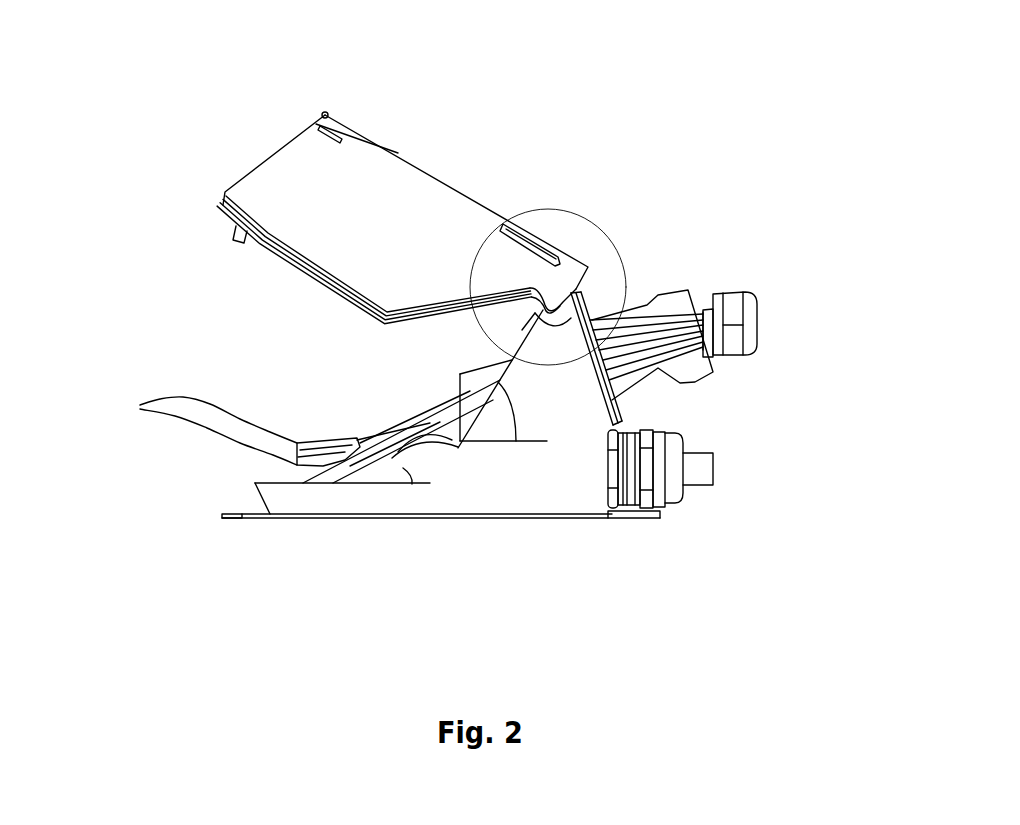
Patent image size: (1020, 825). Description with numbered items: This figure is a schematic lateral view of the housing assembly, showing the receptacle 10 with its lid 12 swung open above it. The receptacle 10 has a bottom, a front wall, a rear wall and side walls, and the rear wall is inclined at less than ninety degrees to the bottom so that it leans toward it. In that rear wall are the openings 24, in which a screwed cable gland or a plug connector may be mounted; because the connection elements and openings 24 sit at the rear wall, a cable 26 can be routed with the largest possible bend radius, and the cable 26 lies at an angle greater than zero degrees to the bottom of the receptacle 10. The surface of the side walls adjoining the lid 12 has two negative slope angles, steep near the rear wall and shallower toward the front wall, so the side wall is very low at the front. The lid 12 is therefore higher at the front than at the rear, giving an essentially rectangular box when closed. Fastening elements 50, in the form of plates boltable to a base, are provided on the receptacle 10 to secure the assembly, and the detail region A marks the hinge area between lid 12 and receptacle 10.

The receptacle 10 is at (539, 500).
The lid 12 is at (417, 180).
The openings 24 is at (613, 408).
The cable 26 is at (142, 408).
The fastening elements 50 is at (240, 518).
The detail circle A is at (608, 232).